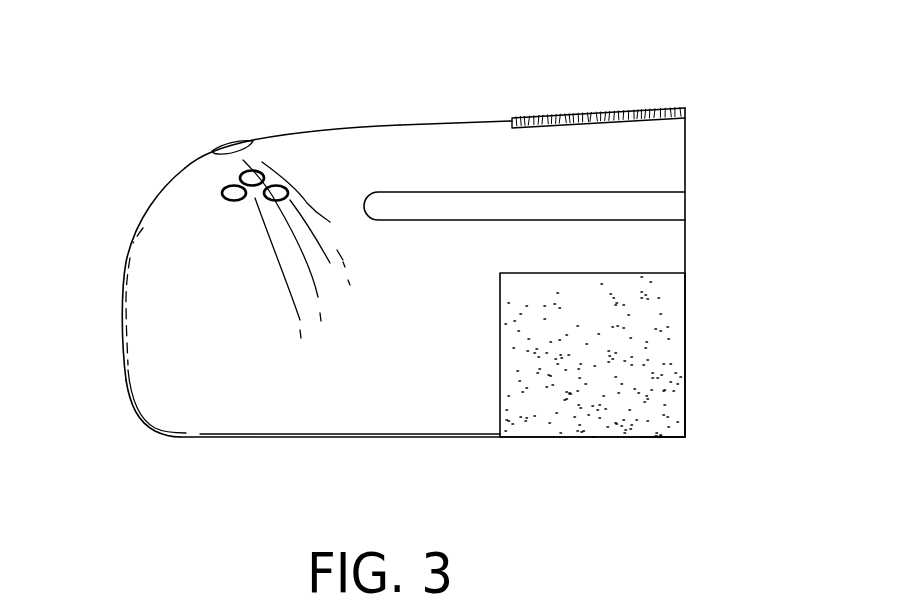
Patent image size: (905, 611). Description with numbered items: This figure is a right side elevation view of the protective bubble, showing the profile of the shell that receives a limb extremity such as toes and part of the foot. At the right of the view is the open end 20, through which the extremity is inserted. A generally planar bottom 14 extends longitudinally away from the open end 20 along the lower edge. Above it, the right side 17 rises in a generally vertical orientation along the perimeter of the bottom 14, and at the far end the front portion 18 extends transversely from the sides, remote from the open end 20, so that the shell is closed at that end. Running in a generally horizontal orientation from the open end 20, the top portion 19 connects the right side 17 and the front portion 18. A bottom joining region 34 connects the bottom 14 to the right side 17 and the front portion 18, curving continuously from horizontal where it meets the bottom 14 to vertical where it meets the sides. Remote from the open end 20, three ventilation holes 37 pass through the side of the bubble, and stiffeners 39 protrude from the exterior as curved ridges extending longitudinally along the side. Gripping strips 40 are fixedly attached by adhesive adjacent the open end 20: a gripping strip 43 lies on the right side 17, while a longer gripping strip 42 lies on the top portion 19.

The bottom 14 is at (400, 438).
The right side 17 is at (446, 174).
The front portion 18 is at (118, 307).
The top portion 19 is at (294, 131).
The open end 20 is at (687, 165).
The bottom joining region 34 is at (160, 421).
The ventilation holes 37 is at (242, 174).
The stiffeners 39 is at (410, 212).
The gripping strips 40 is at (667, 407).
The top gripping strip 42 is at (575, 113).
The right side gripping strip 43 is at (653, 345).